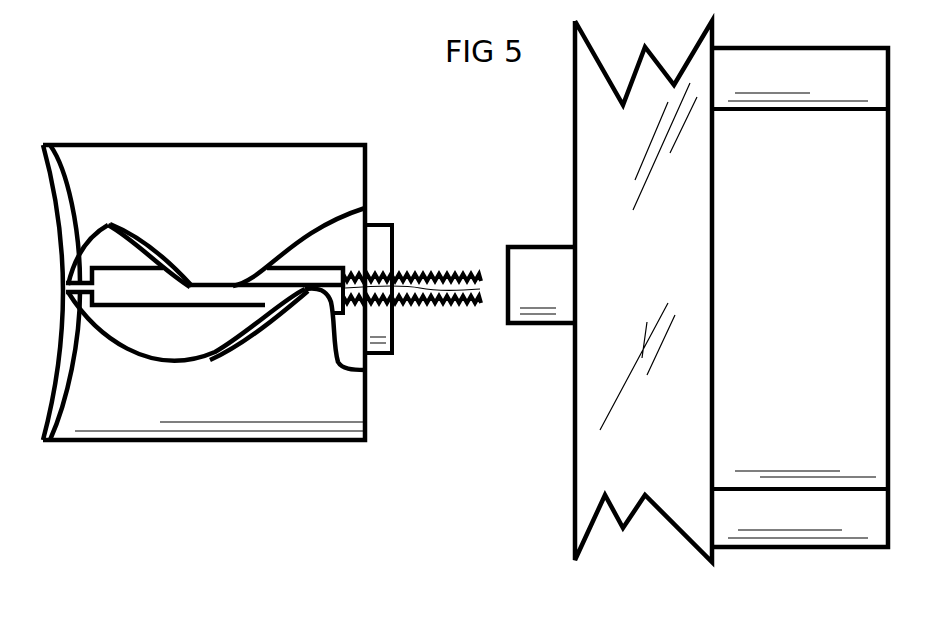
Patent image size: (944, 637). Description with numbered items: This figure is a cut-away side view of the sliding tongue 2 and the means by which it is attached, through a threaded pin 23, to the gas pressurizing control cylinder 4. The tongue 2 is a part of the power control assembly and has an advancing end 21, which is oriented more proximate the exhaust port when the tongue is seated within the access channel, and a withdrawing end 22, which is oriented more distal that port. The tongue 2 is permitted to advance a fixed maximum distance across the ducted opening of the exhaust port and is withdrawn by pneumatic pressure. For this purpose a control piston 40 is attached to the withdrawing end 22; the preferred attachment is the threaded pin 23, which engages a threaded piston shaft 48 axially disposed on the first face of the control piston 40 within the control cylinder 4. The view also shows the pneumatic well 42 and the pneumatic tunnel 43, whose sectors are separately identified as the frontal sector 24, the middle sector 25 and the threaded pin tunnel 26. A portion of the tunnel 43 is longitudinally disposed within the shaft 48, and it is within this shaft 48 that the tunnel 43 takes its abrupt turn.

The sliding tongue 2 is at (228, 370).
The gas pressurizing control cylinder 4 is at (785, 395).
The advancing end 21 is at (50, 413).
The withdrawing end 22 is at (373, 402).
The threaded pin 23 is at (430, 300).
The frontal tunnel sector 24 is at (80, 283).
The middle tunnel sector 25 is at (137, 278).
The threaded pin tunnel 26 is at (410, 278).
The control piston 40 is at (538, 297).
The pneumatic well 42 is at (73, 295).
The pneumatic tunnel 43 is at (150, 290).
The threaded piston shaft 48 is at (565, 299).